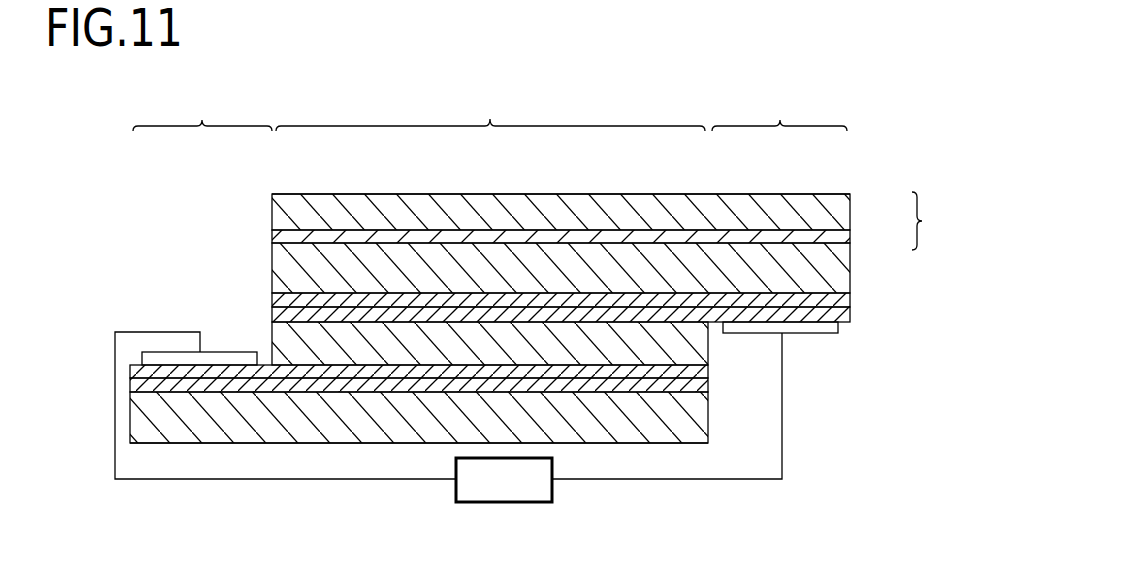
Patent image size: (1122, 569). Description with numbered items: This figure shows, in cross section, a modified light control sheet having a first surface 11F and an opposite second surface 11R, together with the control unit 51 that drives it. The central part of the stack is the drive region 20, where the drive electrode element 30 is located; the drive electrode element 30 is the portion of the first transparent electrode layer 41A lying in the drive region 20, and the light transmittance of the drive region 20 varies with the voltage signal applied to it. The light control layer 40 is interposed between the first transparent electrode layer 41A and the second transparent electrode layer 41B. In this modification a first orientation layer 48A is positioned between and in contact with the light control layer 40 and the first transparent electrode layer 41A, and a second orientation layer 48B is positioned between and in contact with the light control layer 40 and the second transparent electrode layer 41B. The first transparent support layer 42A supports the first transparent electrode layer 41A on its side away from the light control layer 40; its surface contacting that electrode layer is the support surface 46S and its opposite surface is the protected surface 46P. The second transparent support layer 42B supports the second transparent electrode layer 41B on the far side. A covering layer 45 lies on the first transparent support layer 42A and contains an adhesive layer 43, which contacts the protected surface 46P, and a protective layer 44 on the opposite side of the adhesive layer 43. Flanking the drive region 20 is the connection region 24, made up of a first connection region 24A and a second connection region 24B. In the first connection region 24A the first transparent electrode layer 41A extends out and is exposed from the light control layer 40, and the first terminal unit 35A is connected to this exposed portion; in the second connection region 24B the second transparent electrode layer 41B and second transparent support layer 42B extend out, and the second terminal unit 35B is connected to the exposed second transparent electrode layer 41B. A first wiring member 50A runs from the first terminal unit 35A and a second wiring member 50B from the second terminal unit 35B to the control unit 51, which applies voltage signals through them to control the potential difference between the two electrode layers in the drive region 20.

The first surface 11F is at (530, 194).
The second surface 11R is at (305, 443).
The drive region 20 is at (490, 109).
The connection region 24 is at (496, 108).
The first connection region 24A is at (786, 109).
The second connection region 24B is at (206, 108).
The drive electrode element 30 is at (390, 298).
The first terminal unit 35A is at (843, 333).
The second terminal unit 35B is at (222, 352).
The light control layer 40 is at (710, 343).
The first transparent electrode layer 41A is at (852, 298).
The second transparent electrode layer 41B is at (130, 385).
The first transparent support layer 42A is at (852, 262).
The second transparent support layer 42B is at (130, 417).
The adhesive layer 43 is at (852, 236).
The protective layer 44 is at (852, 205).
The covering layer 45 is at (616, 223).
The protected surface 46P is at (745, 242).
The support surface 46S is at (665, 300).
The first orientation layer 48A is at (852, 316).
The second orientation layer 48B is at (130, 368).
The first wiring member 50A is at (668, 480).
The second wiring member 50B is at (225, 480).
The control unit 51 is at (554, 492).